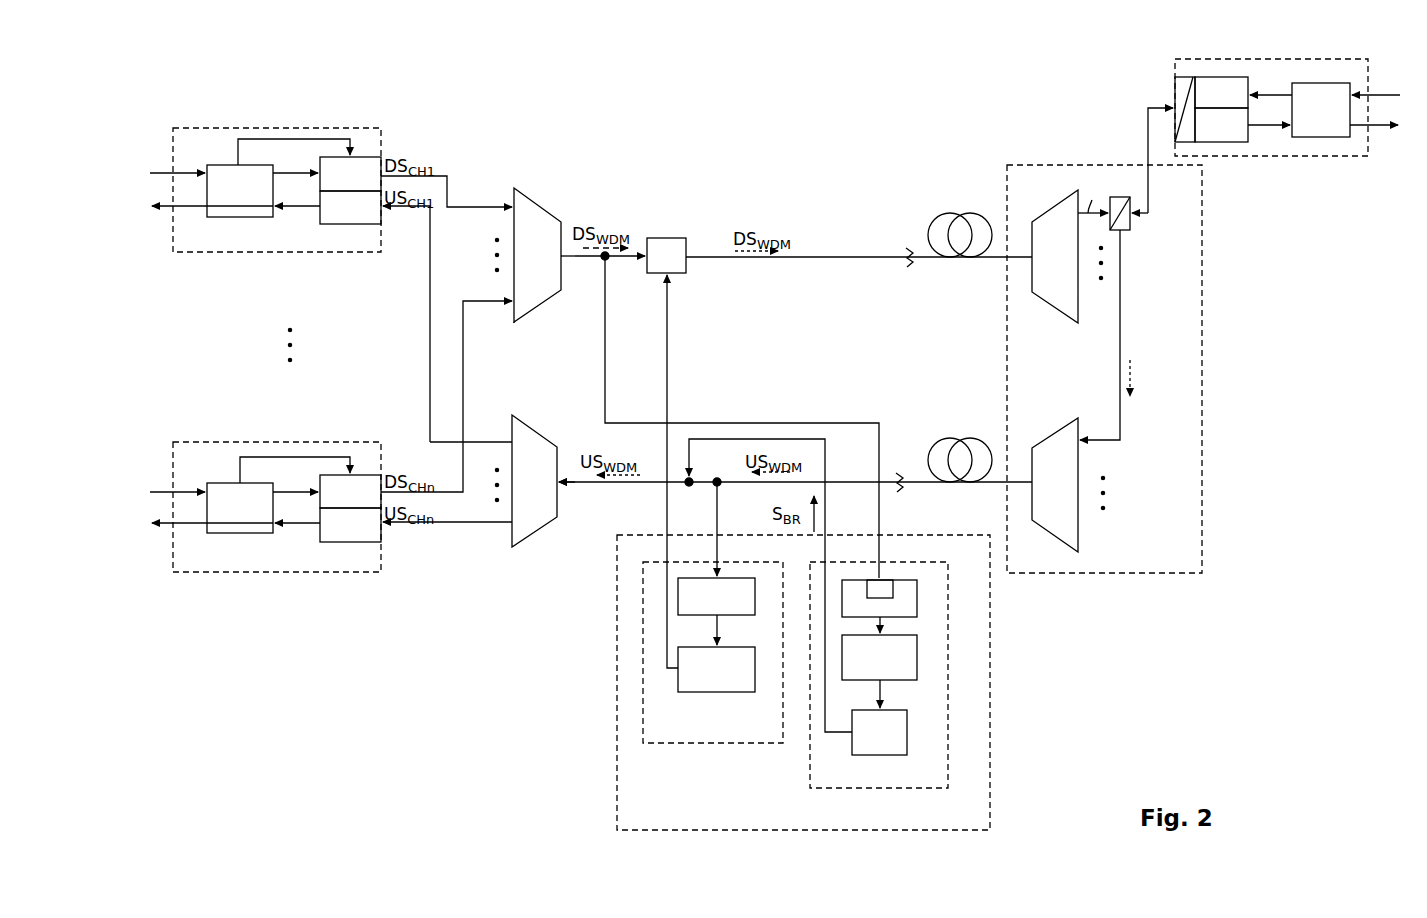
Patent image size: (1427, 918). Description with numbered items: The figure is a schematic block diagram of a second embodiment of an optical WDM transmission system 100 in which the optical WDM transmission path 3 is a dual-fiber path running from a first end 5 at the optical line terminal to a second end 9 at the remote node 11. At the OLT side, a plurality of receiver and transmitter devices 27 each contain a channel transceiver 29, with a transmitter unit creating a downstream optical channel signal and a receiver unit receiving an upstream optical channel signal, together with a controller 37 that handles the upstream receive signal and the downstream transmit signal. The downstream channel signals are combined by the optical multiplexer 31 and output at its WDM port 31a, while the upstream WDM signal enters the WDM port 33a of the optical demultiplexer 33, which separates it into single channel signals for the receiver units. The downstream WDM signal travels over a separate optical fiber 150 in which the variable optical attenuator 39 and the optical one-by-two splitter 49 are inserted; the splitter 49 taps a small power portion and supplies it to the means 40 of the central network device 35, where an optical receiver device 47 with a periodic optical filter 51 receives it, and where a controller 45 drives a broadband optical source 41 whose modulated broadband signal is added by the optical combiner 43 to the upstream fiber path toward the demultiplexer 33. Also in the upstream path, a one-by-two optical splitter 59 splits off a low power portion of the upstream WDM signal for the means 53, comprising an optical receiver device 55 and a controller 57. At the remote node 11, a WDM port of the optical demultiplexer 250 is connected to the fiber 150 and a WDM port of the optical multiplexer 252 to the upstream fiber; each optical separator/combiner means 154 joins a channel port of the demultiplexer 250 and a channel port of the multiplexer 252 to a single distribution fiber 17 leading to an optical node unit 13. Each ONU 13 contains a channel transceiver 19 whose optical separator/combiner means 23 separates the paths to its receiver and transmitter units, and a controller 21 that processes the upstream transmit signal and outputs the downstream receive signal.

The optical WDM transmission system 100 is at (806, 111).
The optical WDM transmission path 3 is at (858, 232).
The first end 5 is at (565, 292).
The second end 9 is at (1027, 260).
The remote node 11 is at (1040, 163).
The optical node unit 13 is at (1240, 59).
The optical fiber 17 is at (1148, 136).
The channel transceiver 19 is at (1215, 144).
The controller 21 is at (1299, 110).
The optical separator/combiner means 23 is at (1180, 90).
The receiver and transmitter device 27 is at (314, 128).
The channel transceiver 29 is at (350, 226).
The optical multiplexer 31 is at (540, 215).
The WDM port 31a is at (563, 252).
The optical demultiplexer 33 is at (523, 432).
The WDM port 33a is at (560, 486).
The central network device 35 is at (617, 745).
The controller 37 is at (263, 349).
The variable optical attenuator 39 is at (668, 238).
The means for establishing downstream and upstream ECCs 40 is at (810, 765).
The broadband optical source 41 is at (879, 732).
The optical combiner 43 is at (689, 488).
The controller 45 is at (879, 671).
The optical receiver device 47 is at (903, 598).
The optical 1×2 splitter 49 is at (608, 261).
The optical filter 51 is at (885, 582).
The means 53 is at (703, 743).
The optical receiver device 55 is at (716, 611).
The controller 57 is at (711, 483).
The 1×2 optical splitter 59 is at (722, 488).
The optical fiber 150 is at (880, 262).
The optical separator/combiner means 154 is at (1131, 225).
The optical demultiplexer 250 is at (1045, 298).
The optical multiplexer 252 is at (1058, 440).